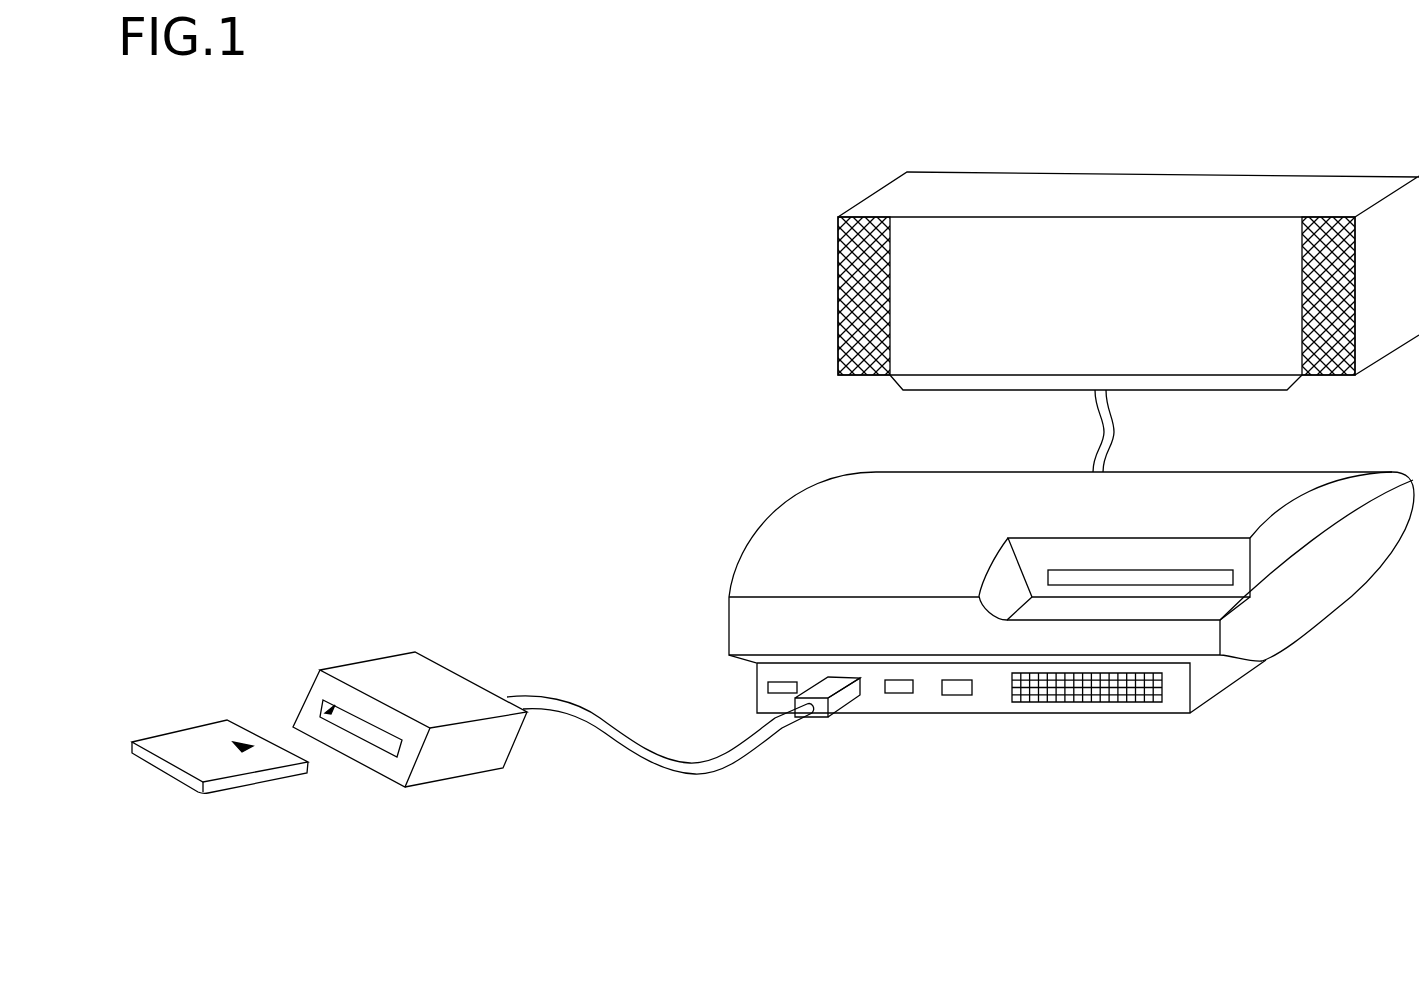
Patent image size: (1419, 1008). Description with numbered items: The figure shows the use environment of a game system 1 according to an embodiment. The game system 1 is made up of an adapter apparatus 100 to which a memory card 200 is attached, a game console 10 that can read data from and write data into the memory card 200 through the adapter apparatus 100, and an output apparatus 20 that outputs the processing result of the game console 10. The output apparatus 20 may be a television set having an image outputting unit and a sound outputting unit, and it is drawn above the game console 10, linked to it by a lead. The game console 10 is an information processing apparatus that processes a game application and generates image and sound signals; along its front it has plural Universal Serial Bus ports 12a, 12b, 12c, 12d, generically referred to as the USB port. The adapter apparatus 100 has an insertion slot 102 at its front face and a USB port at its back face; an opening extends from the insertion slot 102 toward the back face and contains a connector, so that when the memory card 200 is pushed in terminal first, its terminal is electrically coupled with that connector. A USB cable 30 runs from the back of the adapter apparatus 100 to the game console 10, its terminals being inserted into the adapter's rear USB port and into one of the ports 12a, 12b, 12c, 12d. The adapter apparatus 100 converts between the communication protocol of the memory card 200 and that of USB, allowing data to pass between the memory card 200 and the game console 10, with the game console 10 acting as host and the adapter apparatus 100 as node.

The game system 1 is at (782, 915).
The game console 10 is at (1310, 618).
The USB port 12a is at (767, 688).
The USB port 12b is at (860, 687).
The USB port 12c is at (900, 695).
The USB port 12d is at (957, 697).
The output apparatus 20 is at (1127, 197).
The USB cable 30 is at (652, 758).
The adapter apparatus 100 is at (382, 672).
The insertion slot 102 is at (322, 703).
The memory card 200 is at (193, 745).